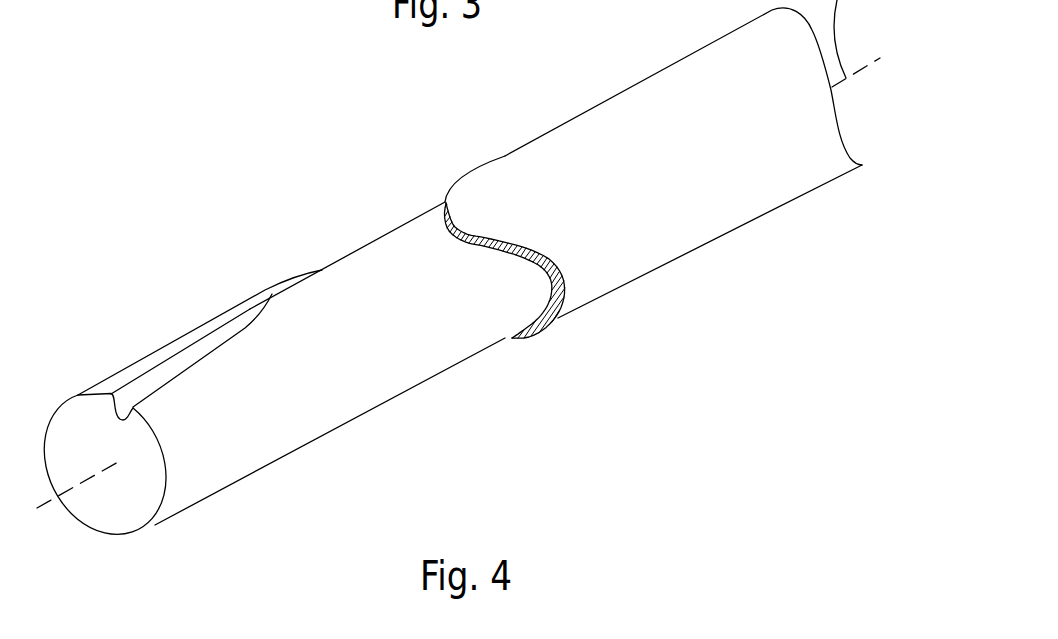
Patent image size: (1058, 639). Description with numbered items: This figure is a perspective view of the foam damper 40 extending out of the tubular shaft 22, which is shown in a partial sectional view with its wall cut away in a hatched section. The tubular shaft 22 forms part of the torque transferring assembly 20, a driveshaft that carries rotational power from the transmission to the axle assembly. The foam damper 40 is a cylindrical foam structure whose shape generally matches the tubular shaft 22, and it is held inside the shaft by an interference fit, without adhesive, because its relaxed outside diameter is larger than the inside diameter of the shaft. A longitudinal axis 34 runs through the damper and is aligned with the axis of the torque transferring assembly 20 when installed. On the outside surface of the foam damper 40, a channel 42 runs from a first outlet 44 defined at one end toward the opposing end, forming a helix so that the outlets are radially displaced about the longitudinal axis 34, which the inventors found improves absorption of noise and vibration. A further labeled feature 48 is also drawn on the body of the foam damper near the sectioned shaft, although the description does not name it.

The torque transferring assembly 20 is at (530, 112).
The tubular shaft 22 is at (655, 260).
The longitudinal axis 34 is at (55, 497).
The foam damper 40 is at (267, 452).
The channel 42 is at (273, 300).
The first outlet 44 is at (120, 412).
The cut 48 is at (413, 365).